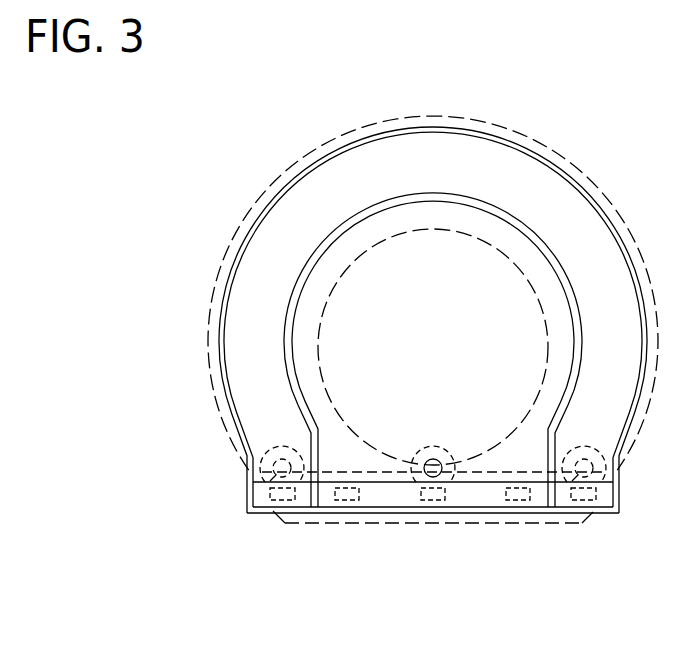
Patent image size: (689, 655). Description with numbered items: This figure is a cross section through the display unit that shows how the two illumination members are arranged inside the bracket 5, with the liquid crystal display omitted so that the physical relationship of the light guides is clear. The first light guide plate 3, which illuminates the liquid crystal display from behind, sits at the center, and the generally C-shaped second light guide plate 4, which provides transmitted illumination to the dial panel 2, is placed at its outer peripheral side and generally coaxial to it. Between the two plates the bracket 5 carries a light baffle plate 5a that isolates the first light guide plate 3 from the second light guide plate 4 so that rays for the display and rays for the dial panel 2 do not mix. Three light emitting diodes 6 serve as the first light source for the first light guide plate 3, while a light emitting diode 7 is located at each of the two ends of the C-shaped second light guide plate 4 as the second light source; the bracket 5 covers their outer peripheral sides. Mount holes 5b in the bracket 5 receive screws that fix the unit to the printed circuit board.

The dial panel 2 is at (442, 115).
The first light guide plate 3 is at (328, 265).
The second light guide plate 4 is at (280, 247).
The bracket 5 is at (356, 137).
The light baffle plate 5a is at (388, 198).
The mount hole 5b is at (263, 489).
The light emitting diode 6 is at (358, 499).
The light emitting diode 7 is at (292, 500).